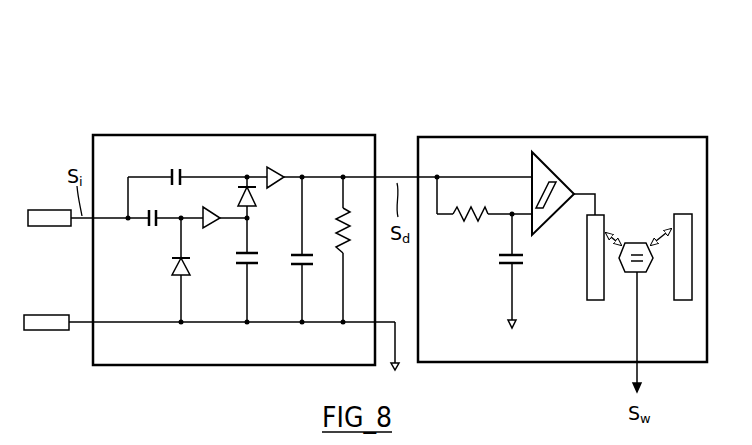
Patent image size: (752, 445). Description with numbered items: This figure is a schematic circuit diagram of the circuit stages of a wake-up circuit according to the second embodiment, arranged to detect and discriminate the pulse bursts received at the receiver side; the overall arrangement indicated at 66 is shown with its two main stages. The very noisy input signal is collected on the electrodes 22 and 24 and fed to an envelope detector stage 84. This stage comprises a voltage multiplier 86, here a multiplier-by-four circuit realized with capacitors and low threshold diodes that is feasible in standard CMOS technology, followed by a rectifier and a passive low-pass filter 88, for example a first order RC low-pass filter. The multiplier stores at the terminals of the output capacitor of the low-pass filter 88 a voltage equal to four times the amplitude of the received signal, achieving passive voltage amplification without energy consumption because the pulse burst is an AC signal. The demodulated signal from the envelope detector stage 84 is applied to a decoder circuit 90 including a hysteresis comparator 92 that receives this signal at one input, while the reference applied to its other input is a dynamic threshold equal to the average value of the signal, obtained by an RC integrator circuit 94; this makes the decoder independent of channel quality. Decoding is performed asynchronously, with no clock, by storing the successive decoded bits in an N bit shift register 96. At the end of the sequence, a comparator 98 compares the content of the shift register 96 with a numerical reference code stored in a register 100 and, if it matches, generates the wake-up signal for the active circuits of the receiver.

The electrode 22 is at (49, 213).
The electrode 24 is at (52, 331).
The sensor signal processing circuit 66 is at (219, 105).
The envelope detector stage 84 is at (300, 135).
The voltage multiplier 86 is at (238, 160).
The passive low-pass filter 88 is at (347, 160).
The decoder circuit 90 is at (578, 137).
The hysteresis comparator 92 is at (557, 176).
The RC integrator circuit 94 is at (483, 248).
The shift register 96 is at (590, 286).
The comparator 98 is at (643, 273).
The register 100 is at (683, 214).